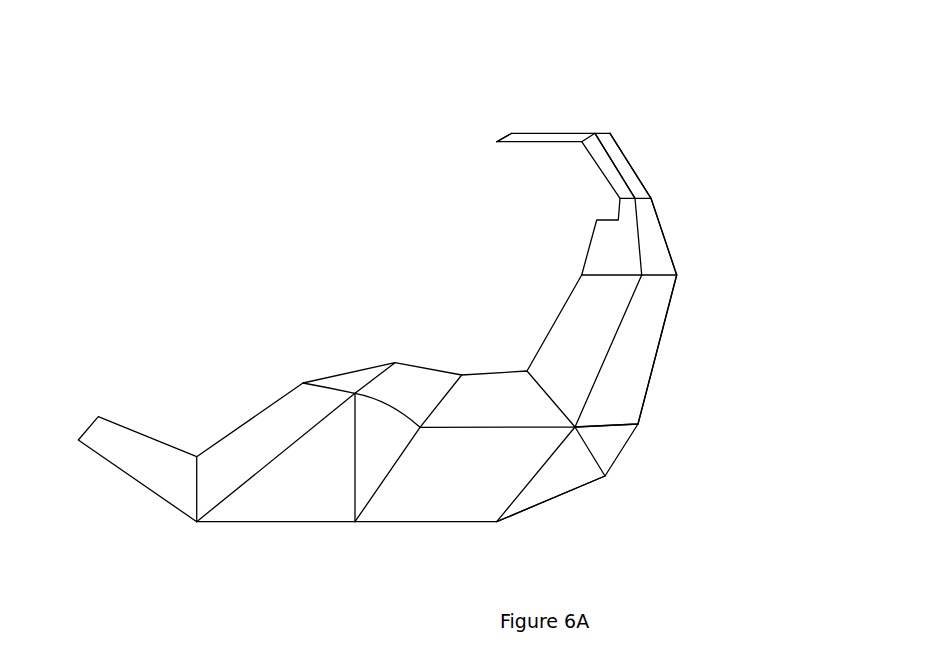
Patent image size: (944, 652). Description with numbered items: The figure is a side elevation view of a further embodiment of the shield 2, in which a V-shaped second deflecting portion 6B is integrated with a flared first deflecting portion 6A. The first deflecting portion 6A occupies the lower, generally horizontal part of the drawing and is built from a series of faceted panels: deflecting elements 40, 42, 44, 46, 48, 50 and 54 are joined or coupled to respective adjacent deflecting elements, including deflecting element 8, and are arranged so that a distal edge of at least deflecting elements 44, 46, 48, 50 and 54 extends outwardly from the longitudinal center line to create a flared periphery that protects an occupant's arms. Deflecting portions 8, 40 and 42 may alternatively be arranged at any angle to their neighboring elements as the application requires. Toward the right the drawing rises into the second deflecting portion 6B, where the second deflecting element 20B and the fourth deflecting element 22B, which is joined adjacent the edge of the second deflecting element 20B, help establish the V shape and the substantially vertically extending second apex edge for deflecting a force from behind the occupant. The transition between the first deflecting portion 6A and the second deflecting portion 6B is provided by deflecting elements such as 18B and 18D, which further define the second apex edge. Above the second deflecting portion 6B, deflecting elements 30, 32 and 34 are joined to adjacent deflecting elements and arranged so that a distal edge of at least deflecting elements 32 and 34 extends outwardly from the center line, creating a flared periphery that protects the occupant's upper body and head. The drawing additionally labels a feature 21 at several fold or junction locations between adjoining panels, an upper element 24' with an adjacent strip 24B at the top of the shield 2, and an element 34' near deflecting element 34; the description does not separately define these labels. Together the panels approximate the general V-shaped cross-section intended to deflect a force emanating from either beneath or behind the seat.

The shield 2 is at (266, 146).
The first deflecting portion 6A is at (311, 278).
The second deflecting portion 6B is at (762, 289).
The deflecting element 8 is at (450, 495).
The deflecting element 18B is at (585, 472).
The deflecting element 18D is at (610, 442).
The second deflecting element 20B is at (646, 360).
The fold line 21 is at (647, 183).
The fourth deflecting element 22B is at (657, 235).
The top flap 24' is at (553, 108).
The top panel strip 24B is at (618, 158).
The deflecting element 30 is at (565, 345).
The deflecting element 32 is at (605, 258).
The deflecting element 34 is at (580, 172).
The fold line 34' is at (517, 163).
The deflecting element 40 is at (365, 462).
The deflecting element 42 is at (283, 492).
The deflecting element 44 is at (480, 403).
The deflecting element 46 is at (408, 397).
The deflecting element 48 is at (348, 380).
The deflecting element 50 is at (263, 427).
The deflecting element 54 is at (137, 452).